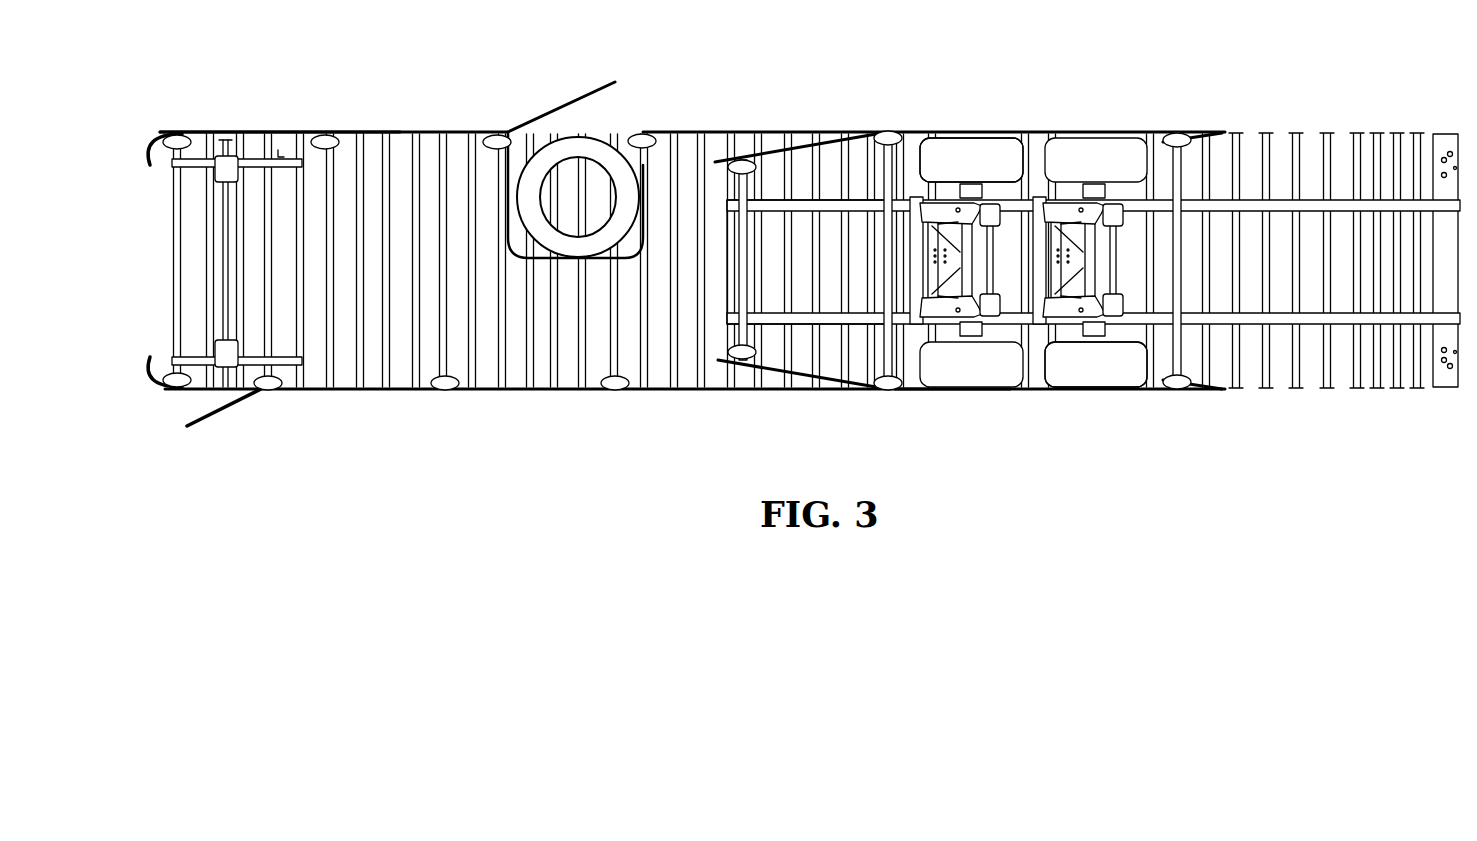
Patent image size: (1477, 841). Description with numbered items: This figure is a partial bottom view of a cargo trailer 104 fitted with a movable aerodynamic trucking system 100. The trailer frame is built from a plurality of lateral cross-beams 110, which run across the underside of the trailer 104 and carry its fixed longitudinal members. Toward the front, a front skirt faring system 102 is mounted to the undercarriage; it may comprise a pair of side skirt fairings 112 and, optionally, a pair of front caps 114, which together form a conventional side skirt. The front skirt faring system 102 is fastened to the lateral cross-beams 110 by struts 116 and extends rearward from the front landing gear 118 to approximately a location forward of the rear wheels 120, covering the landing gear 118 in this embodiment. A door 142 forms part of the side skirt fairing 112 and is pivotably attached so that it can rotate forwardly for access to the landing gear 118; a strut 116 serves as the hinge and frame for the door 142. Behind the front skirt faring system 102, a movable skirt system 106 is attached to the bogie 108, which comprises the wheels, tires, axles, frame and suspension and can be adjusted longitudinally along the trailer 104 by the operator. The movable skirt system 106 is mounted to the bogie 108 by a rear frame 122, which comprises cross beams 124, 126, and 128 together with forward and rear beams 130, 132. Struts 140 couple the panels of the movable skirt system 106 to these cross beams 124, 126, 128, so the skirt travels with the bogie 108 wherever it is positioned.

The movable aerodynamic trucking system 100 is at (809, 275).
The front skirt faring system 102 is at (435, 112).
The cargo trailer 104 is at (575, 195).
The movable skirt system 106 is at (1053, 120).
The bogie 108 is at (680, 150).
The lateral cross-beams 110 is at (1302, 140).
The side skirt fairings 112 is at (240, 132).
The front caps 114 is at (168, 134).
The struts 116 is at (178, 135).
The front landing gear 118 is at (222, 356).
The rear wheels 120 is at (974, 103).
The rear frame 122 is at (858, 342).
The cross beam 124 is at (730, 372).
The cross beam 126 is at (915, 392).
The cross beam 128 is at (1185, 390).
The forward beam 130 is at (808, 200).
The rear beam 132 is at (1140, 142).
The struts 140 is at (890, 134).
The door 142 is at (200, 428).